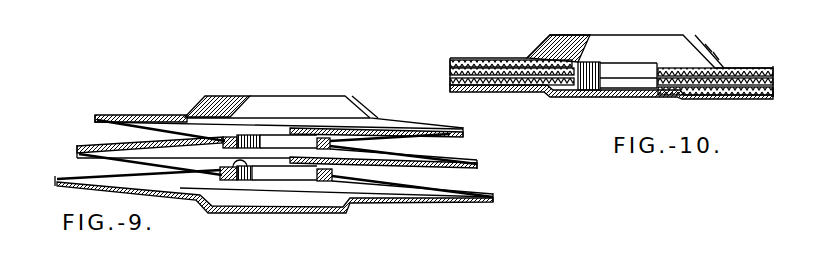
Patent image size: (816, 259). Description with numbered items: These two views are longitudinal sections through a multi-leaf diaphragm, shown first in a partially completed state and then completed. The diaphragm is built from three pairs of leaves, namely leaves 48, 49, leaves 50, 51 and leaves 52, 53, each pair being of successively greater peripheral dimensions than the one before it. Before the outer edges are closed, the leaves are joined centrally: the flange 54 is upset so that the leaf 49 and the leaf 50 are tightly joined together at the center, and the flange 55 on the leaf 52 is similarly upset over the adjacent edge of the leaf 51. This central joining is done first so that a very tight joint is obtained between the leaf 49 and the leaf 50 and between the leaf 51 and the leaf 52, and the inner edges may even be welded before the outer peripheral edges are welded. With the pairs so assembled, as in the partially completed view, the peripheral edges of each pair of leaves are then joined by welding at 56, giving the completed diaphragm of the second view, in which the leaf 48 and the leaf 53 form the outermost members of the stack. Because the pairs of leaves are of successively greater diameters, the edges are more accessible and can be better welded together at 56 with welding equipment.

In FIG. 9, the leaf 48 is at (157, 114).
In FIG. 10, the leaf 48 is at (481, 60).
In FIG. 9, the leaf 49 is at (128, 128).
In FIG. 10, the leaf 49 is at (774, 70).
In FIG. 9, the leaf 50 is at (157, 142).
In FIG. 10, the leaf 50 is at (448, 66).
In FIG. 9, the leaf 51 is at (128, 162).
In FIG. 10, the leaf 51 is at (776, 97).
In FIG. 9, the leaf 52 is at (80, 187).
In FIG. 10, the leaf 52 is at (448, 79).
In FIG. 9, the leaf 53 is at (126, 193).
In FIG. 10, the leaf 53 is at (723, 97).
In FIG. 9, the flange 54 is at (233, 137).
In FIG. 10, the flange 54 is at (593, 63).
In FIG. 9, the flange 55 is at (246, 181).
In FIG. 10, the flange 55 is at (594, 92).
In FIG. 9, the weld 56 is at (117, 107).